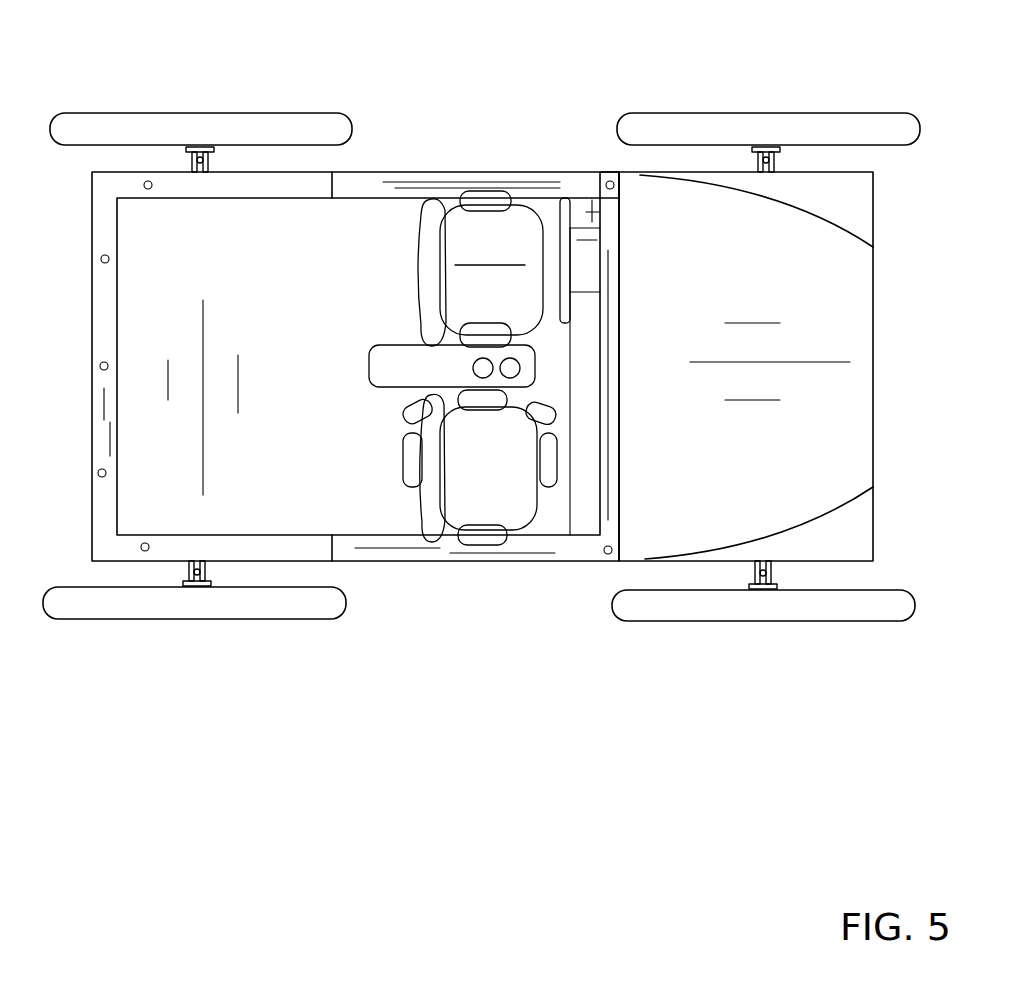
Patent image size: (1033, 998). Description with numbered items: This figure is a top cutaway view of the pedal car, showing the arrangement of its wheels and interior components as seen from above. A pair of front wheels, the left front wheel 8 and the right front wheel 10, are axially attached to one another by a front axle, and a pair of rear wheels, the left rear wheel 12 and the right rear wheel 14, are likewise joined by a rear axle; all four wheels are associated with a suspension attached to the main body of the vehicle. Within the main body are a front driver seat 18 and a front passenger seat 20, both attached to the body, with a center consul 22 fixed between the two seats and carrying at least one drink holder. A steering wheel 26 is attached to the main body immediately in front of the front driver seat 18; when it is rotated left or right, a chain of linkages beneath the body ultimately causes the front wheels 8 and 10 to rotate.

The left front wheel 8 is at (786, 113).
The right front wheel 10 is at (805, 623).
The left rear wheel 12 is at (211, 110).
The right rear wheel 14 is at (190, 621).
The front driver seat 18 is at (487, 258).
The front passenger seat 20 is at (488, 487).
The center consul 22 is at (452, 522).
The steering wheel 26 is at (566, 293).